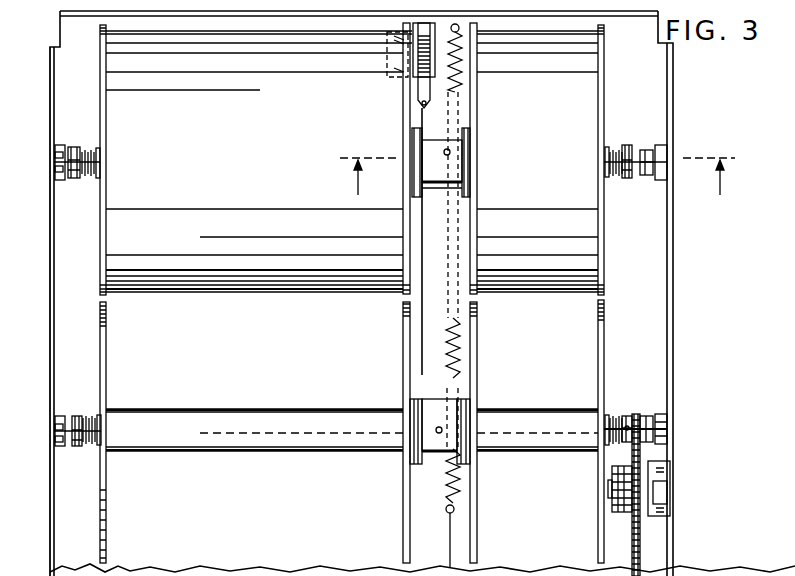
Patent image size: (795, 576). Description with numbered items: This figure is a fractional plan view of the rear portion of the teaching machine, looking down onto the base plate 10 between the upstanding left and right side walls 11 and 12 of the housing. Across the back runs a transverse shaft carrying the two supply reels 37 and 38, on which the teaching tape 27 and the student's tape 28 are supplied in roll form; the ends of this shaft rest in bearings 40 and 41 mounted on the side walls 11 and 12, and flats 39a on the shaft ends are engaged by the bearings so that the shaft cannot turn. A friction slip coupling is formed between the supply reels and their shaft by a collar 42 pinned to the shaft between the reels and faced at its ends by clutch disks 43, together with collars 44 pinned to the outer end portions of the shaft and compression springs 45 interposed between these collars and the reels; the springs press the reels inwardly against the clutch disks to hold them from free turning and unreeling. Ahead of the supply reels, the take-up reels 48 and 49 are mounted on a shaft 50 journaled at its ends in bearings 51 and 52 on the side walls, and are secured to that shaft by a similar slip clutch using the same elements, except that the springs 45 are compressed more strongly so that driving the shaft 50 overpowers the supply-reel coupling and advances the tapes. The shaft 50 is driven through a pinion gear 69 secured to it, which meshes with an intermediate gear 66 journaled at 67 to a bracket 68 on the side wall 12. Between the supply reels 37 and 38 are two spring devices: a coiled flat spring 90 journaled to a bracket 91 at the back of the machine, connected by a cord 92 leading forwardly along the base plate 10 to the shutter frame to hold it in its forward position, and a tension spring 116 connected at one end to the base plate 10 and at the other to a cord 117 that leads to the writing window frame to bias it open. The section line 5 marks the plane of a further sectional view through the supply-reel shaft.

The section line 5— 5 is at (538, 176).
The base plate 10 is at (68, 505).
The left side wall 11 is at (50, 262).
The right side wall 12 is at (673, 280).
The teaching tape 27 is at (210, 28).
The student's tape 28 is at (527, 35).
The supply reel 37 is at (100, 80).
The supply reel 38 is at (604, 75).
The flats 39a is at (60, 153).
The bearing 40 is at (70, 150).
The bearing 41 is at (660, 150).
The collar 42 is at (450, 152).
The clutch disks 43 is at (466, 128).
The collars 44 is at (78, 180).
The compression springs 45 is at (92, 150).
The take-up reel 48 is at (100, 336).
The take-up reel 49 is at (604, 335).
The shaft 50 is at (660, 428).
The bearing 51 is at (55, 420).
The bearing 52 is at (662, 415).
The intermediate gear 66 is at (635, 515).
The journal 67 is at (610, 490).
The bracket 68 is at (660, 463).
The pinion gear 69 is at (630, 440).
The coiled flat spring 90 is at (425, 53).
The bracket 91 is at (392, 38).
The cord 92 is at (422, 350).
The tension spring 116 is at (458, 350).
The cord 117 is at (452, 545).